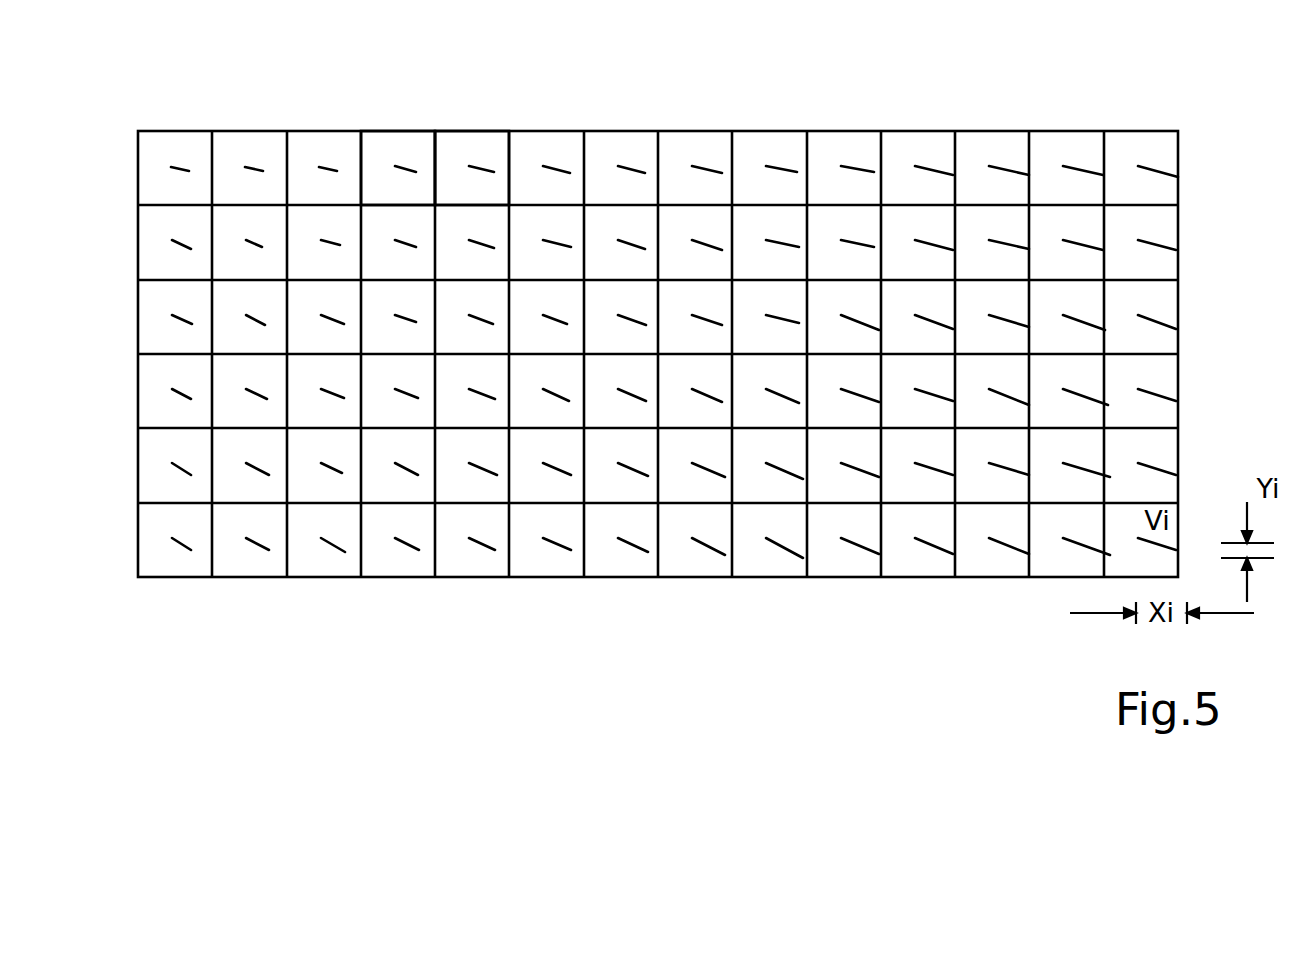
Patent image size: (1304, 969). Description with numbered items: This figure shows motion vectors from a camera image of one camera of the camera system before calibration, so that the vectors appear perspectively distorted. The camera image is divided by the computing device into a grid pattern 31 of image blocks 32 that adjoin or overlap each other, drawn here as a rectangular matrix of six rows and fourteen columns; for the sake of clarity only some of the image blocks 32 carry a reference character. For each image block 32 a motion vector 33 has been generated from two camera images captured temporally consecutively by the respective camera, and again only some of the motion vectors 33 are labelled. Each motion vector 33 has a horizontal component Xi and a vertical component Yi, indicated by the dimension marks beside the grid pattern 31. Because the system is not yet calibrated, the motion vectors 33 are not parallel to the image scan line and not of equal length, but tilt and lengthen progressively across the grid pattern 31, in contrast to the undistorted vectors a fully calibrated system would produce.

The grid pattern 31 is at (860, 130).
The image block 32 is at (497, 142).
The motion vector 33 is at (328, 168).